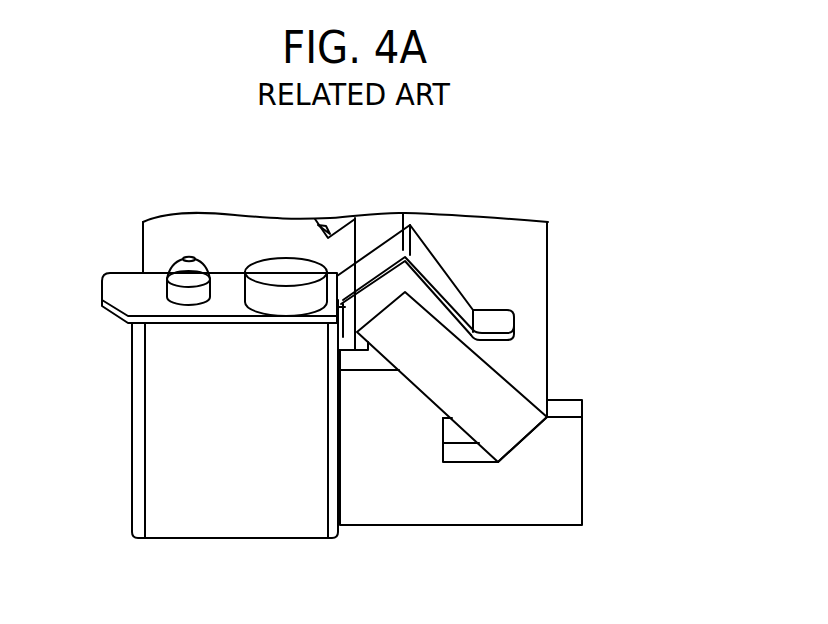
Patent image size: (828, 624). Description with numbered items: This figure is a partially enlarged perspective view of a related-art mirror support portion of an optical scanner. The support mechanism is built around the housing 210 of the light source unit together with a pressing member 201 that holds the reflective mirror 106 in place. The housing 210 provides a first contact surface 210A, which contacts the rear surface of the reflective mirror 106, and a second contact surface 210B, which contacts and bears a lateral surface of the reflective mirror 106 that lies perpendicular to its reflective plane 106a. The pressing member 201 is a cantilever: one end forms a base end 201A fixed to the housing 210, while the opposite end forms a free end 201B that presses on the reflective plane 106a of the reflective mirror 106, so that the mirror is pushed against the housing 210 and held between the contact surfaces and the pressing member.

The reflective mirror 106 is at (549, 321).
The reflective plane 106a is at (543, 246).
The pressing member 201 is at (425, 245).
The base end 201A is at (125, 281).
The free end 201B is at (460, 303).
The housing 210 is at (236, 540).
The first contact surface 210A is at (422, 382).
The second contact surface 210B is at (517, 433).